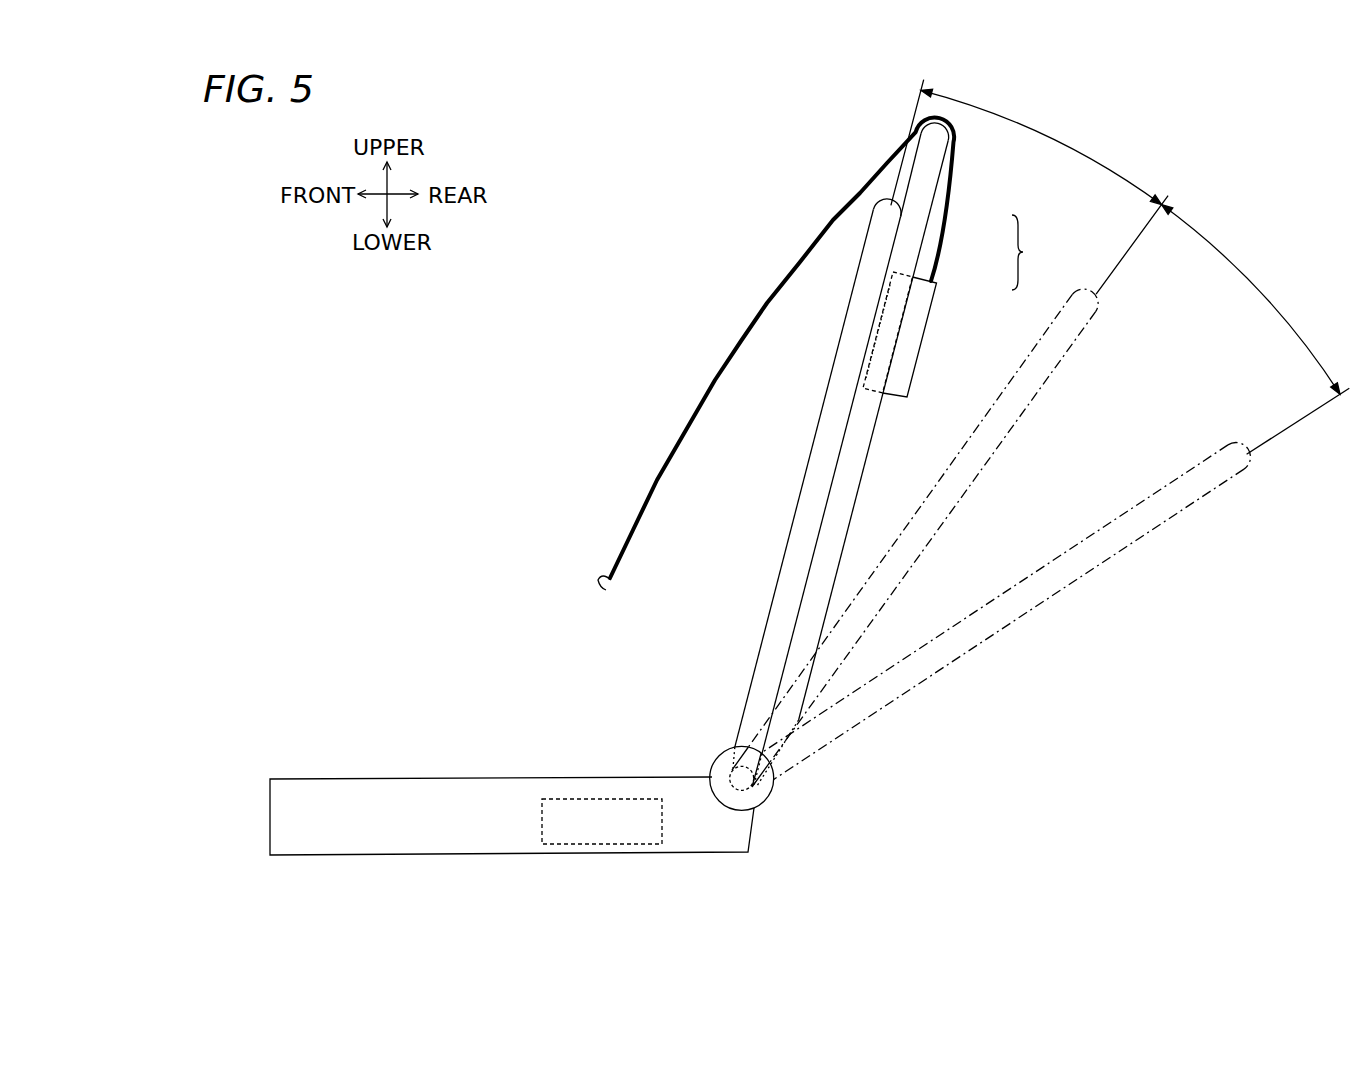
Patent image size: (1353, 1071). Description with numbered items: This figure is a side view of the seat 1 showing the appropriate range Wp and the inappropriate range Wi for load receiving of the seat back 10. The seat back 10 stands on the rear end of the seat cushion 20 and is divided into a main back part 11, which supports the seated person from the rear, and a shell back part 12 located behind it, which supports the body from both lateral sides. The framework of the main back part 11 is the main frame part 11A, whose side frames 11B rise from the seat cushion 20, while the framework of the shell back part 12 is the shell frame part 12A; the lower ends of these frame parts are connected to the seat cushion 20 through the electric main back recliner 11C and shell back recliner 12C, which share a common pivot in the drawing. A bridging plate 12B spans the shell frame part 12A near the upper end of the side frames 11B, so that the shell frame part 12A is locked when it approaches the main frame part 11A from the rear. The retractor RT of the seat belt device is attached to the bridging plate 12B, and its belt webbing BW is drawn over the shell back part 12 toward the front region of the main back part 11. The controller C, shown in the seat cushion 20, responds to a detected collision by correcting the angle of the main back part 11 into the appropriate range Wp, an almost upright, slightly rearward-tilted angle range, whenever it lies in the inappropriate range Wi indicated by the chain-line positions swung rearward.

The seat 1 is at (620, 233).
The seat back 10 is at (828, 323).
The main back part 11 is at (836, 411).
The main frame part 11A is at (812, 502).
The side frames 11B is at (804, 485).
The main back recliner 11C is at (758, 793).
The shell back part 12 is at (860, 441).
The shell frame part 12A is at (852, 468).
The bridging plate 12B is at (877, 328).
The shell back recliner 12C is at (816, 800).
The seat cushion 20 is at (405, 778).
The controller C is at (603, 818).
The belt webbing BW is at (833, 222).
The retractor RT is at (927, 292).
The appropriate range Wp is at (1029, 187).
The inappropriate range Wi is at (1256, 330).